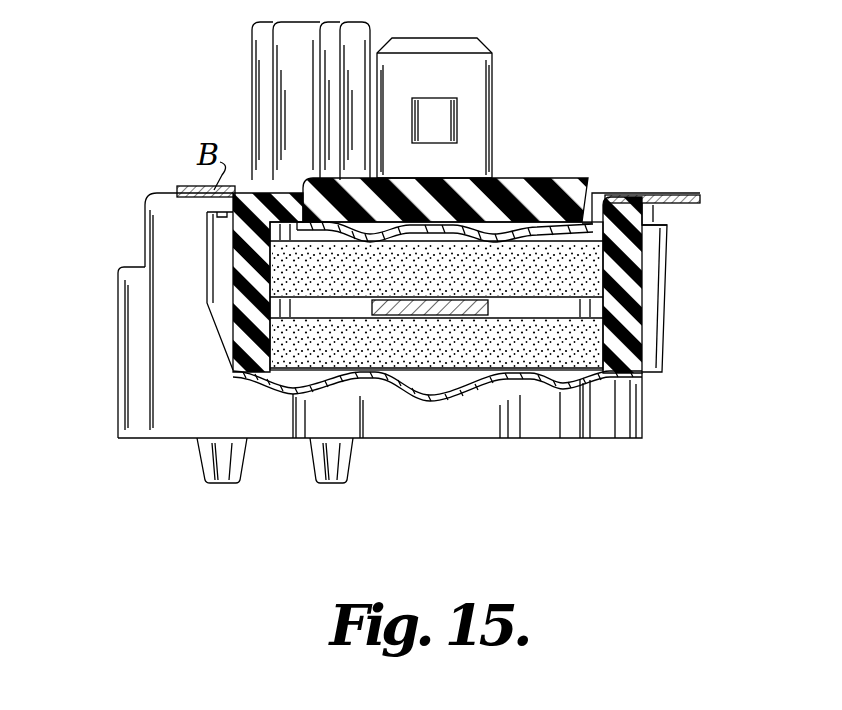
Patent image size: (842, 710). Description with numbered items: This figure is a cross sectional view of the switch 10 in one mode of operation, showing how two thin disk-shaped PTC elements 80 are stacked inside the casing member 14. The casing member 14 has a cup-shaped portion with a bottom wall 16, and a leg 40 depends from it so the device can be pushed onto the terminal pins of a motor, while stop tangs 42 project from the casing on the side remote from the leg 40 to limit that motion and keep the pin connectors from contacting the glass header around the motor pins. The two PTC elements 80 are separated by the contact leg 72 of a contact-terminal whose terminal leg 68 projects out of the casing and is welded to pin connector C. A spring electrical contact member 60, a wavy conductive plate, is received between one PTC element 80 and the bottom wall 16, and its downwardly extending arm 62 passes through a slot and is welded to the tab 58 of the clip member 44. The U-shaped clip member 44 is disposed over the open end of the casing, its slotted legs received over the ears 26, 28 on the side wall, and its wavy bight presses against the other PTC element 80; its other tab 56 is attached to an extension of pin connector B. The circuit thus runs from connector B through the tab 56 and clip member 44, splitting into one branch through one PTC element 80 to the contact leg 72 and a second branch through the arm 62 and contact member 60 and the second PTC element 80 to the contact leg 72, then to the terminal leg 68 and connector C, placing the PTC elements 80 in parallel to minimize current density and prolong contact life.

The switch 10 is at (110, 407).
The casing member 14 is at (542, 175).
The bottom wall 16 is at (573, 188).
The ear 26 is at (205, 307).
The ear 28 is at (667, 277).
The leg 40 is at (348, 63).
The stop tangs 42 is at (315, 483).
The clip member 44 is at (362, 386).
The tab 56 is at (200, 203).
The tab 58 is at (685, 205).
The electrical contact member 60 is at (333, 230).
The arm 62 is at (675, 168).
The terminal leg 68 is at (472, 82).
The contact leg 72 is at (397, 304).
The PTC element 80 is at (465, 286).